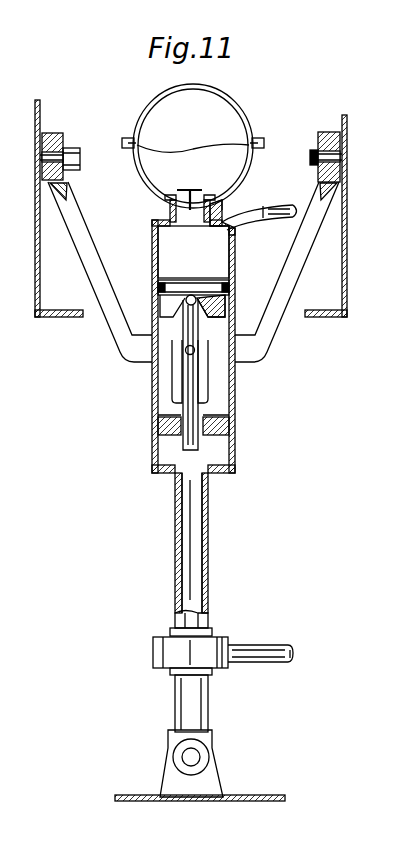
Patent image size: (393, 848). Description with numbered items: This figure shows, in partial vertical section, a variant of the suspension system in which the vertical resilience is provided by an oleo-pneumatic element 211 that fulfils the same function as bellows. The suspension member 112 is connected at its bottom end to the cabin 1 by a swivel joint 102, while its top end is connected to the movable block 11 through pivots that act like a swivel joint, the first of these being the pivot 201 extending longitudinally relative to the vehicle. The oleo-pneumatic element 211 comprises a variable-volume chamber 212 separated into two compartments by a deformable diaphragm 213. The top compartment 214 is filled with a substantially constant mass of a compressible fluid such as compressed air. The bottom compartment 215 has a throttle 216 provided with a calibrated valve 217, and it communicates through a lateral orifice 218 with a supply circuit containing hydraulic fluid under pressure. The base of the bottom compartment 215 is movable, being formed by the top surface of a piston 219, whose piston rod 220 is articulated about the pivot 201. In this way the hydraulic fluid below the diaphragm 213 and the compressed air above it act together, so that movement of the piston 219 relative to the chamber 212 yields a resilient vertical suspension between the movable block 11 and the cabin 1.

The cabin 1 is at (148, 795).
The movable block 11 is at (33, 280).
The swivel joint 102 is at (197, 755).
The suspension member 112 is at (175, 702).
The pivot 201 is at (188, 352).
The oleo-pneumatic element 211 is at (233, 385).
The variable-volume chamber 212 is at (150, 245).
The deformable diaphragm 213 is at (158, 150).
The top compartment 214 is at (227, 118).
The bottom compartment 215 is at (180, 265).
The throttle 216 is at (213, 212).
The calibrated valve 217 is at (188, 188).
The lateral orifice 218 is at (232, 227).
The piston 219 is at (210, 307).
The piston rod 220 is at (195, 322).